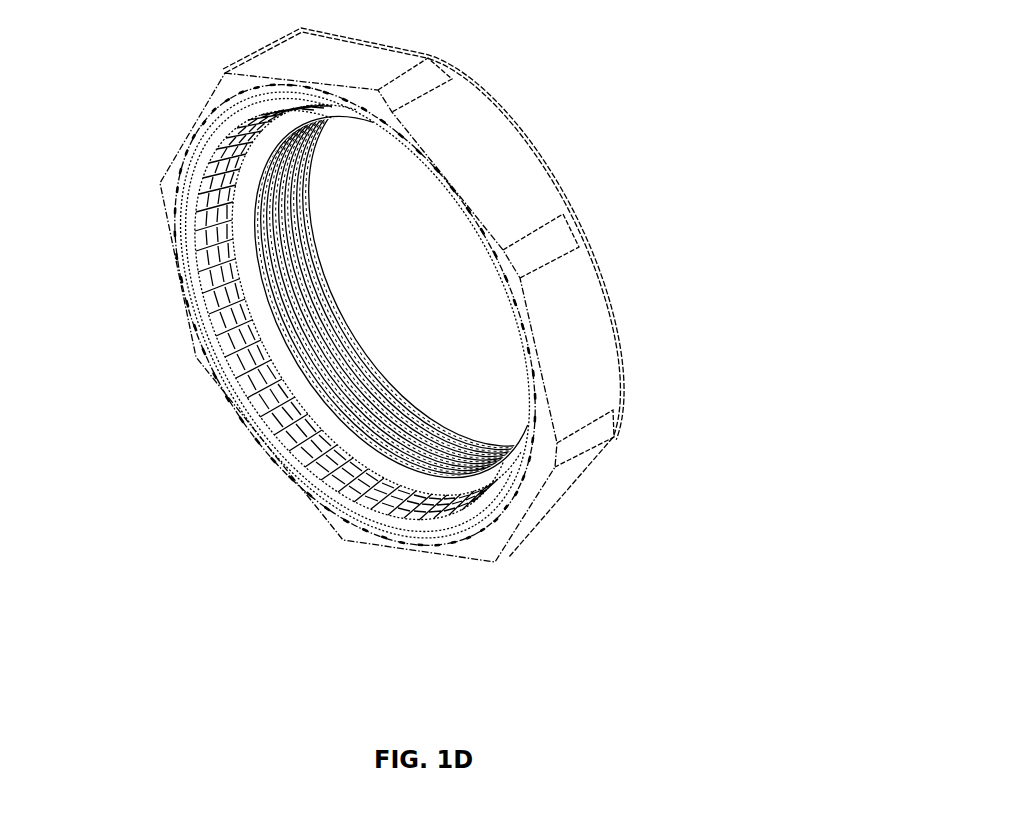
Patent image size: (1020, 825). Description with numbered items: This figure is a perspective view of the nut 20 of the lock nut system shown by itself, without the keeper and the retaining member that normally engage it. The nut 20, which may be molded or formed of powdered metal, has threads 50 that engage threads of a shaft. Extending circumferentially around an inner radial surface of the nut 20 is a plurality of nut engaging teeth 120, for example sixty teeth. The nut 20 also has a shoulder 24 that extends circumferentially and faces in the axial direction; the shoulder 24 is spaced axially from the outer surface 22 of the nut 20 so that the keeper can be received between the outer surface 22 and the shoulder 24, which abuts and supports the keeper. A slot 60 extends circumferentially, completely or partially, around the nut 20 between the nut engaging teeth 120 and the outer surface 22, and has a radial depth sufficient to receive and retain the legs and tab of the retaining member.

The nut 20 is at (520, 120).
The outer surface 22 is at (325, 518).
The shoulder 24 is at (463, 497).
The threads 50 is at (258, 253).
The slot 60 is at (227, 373).
The nut engaging teeth 120 is at (378, 502).